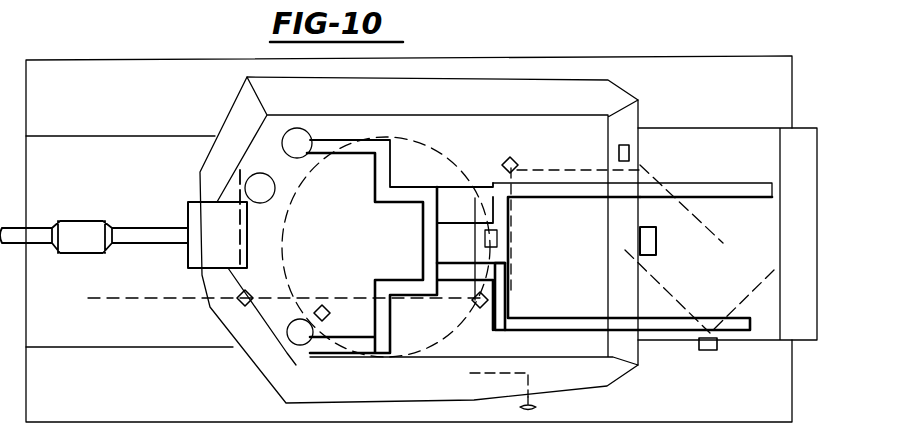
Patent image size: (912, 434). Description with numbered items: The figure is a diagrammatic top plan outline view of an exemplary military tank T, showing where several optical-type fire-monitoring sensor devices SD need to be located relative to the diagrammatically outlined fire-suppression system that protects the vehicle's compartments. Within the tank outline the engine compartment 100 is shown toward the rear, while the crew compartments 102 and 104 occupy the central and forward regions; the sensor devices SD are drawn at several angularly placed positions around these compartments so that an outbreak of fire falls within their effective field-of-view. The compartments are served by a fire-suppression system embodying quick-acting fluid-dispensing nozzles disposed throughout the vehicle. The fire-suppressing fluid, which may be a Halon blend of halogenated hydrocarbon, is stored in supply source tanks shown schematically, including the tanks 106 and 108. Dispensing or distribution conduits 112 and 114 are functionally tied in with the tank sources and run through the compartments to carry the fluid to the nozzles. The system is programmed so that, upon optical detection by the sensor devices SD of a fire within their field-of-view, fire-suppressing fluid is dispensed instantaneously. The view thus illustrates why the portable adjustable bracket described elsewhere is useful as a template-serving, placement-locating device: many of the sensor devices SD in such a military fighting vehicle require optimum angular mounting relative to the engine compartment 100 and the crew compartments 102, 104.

The military tank T is at (634, 43).
The engine compartment 100 is at (273, 383).
The crew compartment 102 is at (385, 250).
The crew compartment 104 is at (158, 200).
The supply source tank 106 is at (257, 178).
The supply source tank 108 is at (298, 128).
The dispensing conduit 112 is at (382, 173).
The dispensing conduit 114 is at (390, 322).
The optical-type fire-monitoring sensor device SD is at (513, 158).